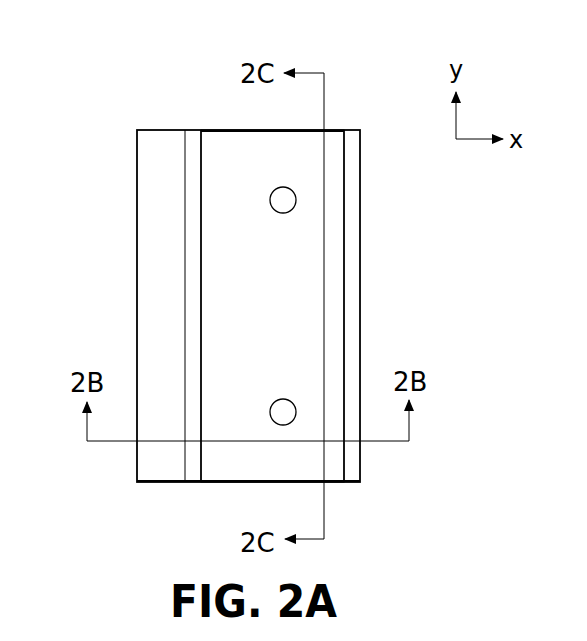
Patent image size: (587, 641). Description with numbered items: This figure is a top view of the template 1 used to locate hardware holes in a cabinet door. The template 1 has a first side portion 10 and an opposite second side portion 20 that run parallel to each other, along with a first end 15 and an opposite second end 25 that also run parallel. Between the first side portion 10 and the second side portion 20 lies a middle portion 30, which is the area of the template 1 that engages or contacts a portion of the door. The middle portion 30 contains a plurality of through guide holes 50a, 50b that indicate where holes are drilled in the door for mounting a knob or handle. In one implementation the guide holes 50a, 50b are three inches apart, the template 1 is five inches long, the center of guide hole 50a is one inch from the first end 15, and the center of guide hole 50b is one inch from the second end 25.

The template 1 is at (114, 68).
The first side portion 10 is at (361, 253).
The first end 15 is at (148, 483).
The second side portion 20 is at (136, 233).
The second end 25 is at (212, 130).
The middle portion 30 is at (228, 218).
The guide hole 50a is at (272, 408).
The guide hole 50b is at (270, 195).